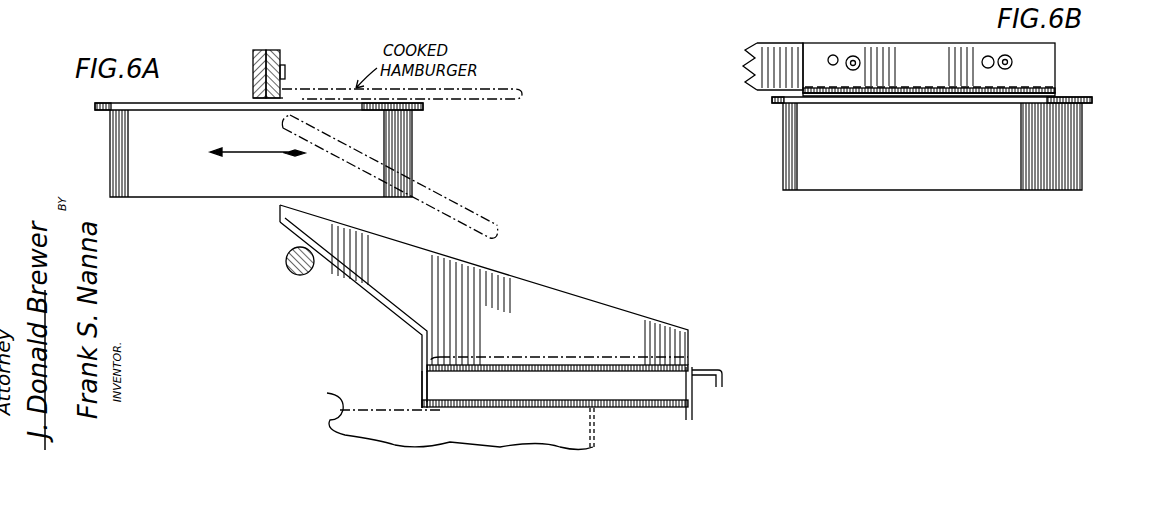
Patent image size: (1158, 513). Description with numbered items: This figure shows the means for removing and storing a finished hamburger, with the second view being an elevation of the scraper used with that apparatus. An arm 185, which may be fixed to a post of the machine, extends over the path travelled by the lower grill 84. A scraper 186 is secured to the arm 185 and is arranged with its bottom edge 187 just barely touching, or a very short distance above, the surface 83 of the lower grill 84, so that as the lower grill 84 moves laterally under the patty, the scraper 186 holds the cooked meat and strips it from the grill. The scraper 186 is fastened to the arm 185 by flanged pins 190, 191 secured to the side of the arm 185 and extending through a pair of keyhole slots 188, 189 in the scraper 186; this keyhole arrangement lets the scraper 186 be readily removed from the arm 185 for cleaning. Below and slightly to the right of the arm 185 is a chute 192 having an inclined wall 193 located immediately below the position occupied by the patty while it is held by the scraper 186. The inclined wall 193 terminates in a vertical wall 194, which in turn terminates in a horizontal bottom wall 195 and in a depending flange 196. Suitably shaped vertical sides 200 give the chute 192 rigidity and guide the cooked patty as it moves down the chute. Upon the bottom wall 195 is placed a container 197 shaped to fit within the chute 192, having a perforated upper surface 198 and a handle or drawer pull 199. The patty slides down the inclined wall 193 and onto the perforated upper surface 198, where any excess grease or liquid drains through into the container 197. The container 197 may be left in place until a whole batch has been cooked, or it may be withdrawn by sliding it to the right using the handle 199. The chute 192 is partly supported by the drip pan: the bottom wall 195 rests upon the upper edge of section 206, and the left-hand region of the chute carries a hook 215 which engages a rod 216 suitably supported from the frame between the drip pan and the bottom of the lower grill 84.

In FIG. 6A, the surface 83 is at (110, 98).
In FIG. 6B, the surface 83 is at (1062, 96).
In FIG. 6A, the lower grill 84 is at (182, 153).
In FIG. 6B, the lower grill 84 is at (867, 163).
In FIG. 6A, the arm 185 is at (255, 55).
In FIG. 6B, the arm 185 is at (755, 43).
In FIG. 6A, the scraper 186 is at (285, 56).
In FIG. 6B, the scraper 186 is at (937, 72).
In FIG. 6A, the bottom edge 187 is at (262, 100).
In FIG. 6B, the bottom edge 187 is at (888, 98).
In FIG. 6B, the keyhole slot 188 is at (830, 55).
In FIG. 6B, the keyhole slot 189 is at (984, 56).
In FIG. 6B, the flanged pin 190 is at (855, 56).
In FIG. 6B, the flanged pin 191 is at (1012, 62).
In FIG. 6A, the chute 192 is at (503, 279).
In FIG. 6A, the inclined wall 193 is at (384, 295).
In FIG. 6A, the vertical wall 194 is at (427, 380).
In FIG. 6A, the bottom wall 195 is at (545, 403).
In FIG. 6A, the depending flange 196 is at (692, 412).
In FIG. 6A, the container 197 is at (706, 396).
In FIG. 6A, the perforated upper surface 198 is at (630, 338).
In FIG. 6A, the handle 199 is at (725, 378).
In FIG. 6A, the vertical sides 200 is at (580, 298).
In FIG. 6A, the section 206 is at (340, 405).
In FIG. 6A, the hook 215 is at (287, 253).
In FIG. 6A, the rod 216 is at (312, 273).